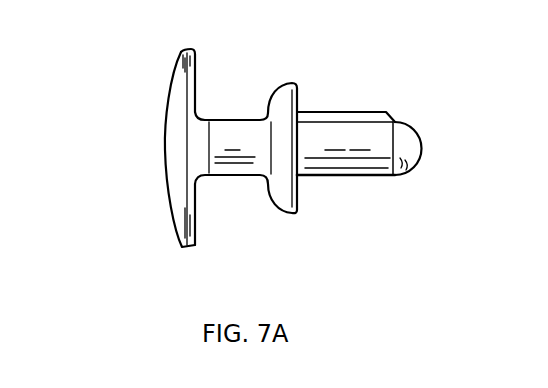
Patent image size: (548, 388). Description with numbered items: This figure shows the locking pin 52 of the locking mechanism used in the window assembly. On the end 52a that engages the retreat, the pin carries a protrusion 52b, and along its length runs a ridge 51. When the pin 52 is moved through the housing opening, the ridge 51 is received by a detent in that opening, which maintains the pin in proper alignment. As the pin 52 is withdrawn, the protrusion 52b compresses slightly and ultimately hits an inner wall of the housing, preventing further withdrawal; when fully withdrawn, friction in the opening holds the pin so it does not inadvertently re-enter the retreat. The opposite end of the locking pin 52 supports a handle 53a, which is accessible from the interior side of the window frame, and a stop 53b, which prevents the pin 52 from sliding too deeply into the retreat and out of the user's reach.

The locking pin 52 is at (104, 46).
The end 52a is at (414, 126).
The protrusion 52b is at (396, 175).
The ridge 51 is at (336, 111).
The handle 53a is at (188, 248).
The stop 53b is at (275, 104).